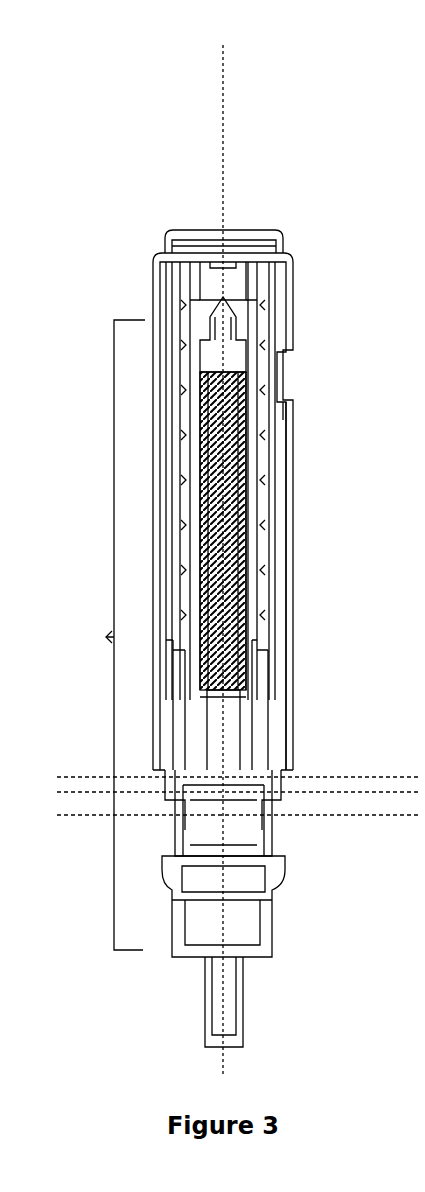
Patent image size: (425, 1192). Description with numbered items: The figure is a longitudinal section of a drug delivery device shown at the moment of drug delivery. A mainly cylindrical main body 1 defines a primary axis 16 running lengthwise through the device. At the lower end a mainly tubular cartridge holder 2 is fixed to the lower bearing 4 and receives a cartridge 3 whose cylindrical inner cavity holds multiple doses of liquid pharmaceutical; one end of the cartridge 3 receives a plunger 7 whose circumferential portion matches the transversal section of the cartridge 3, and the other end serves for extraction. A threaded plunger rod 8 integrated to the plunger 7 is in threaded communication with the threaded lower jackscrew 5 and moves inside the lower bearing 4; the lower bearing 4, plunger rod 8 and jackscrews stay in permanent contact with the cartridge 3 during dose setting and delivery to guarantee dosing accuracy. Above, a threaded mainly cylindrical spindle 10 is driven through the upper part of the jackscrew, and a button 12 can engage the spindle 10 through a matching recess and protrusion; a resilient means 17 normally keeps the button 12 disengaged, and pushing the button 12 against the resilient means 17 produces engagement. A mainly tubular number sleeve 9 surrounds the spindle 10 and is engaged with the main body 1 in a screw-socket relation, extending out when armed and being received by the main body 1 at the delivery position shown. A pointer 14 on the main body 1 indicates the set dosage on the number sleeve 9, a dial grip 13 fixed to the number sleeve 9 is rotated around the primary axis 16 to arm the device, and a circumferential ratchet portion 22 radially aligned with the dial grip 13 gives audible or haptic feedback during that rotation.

The main body 1 is at (105, 635).
The cartridge holder 2 is at (277, 840).
The cartridge 3 is at (268, 877).
The lower bearing 4 is at (250, 665).
The lower jackscrew 5 is at (222, 707).
The plunger 7 is at (240, 820).
The plunger rod 8 is at (245, 755).
The number sleeve 9 is at (280, 368).
The spindle 10 is at (262, 448).
The button 12 is at (165, 240).
The dial grip 13 is at (290, 285).
The pointer 14 is at (290, 415).
The primary axis 16 is at (224, 108).
The resilient means 17 is at (193, 250).
The ratchet portion 22 is at (163, 287).